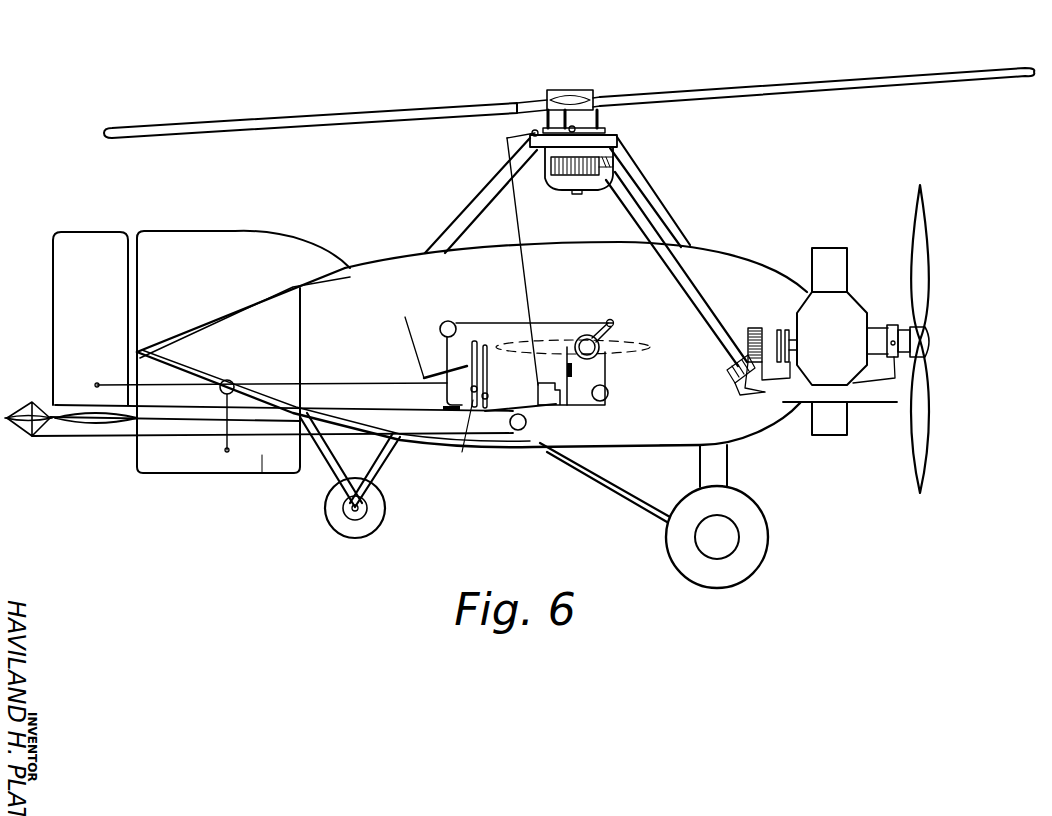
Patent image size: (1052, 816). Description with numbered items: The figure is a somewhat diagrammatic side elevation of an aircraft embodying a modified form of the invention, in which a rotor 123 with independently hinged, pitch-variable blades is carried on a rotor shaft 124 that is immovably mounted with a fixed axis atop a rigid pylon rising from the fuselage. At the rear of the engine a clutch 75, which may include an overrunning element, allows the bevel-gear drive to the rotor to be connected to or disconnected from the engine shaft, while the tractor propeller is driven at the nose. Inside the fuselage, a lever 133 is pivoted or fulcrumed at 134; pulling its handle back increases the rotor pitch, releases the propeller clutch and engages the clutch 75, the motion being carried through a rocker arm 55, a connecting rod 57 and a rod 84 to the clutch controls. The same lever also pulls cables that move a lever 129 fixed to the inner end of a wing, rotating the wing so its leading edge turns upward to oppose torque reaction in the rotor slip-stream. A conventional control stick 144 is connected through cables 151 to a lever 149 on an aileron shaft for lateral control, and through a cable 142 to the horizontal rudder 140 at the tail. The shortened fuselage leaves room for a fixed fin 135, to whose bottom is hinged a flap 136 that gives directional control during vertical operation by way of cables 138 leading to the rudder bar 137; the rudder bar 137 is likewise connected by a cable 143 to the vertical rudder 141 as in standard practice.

The rotor 123 is at (569, 103).
The rotor shaft 124 is at (577, 194).
The fixed fin 135 is at (220, 247).
The vertical rudder 141 is at (62, 344).
The cable 142 is at (200, 430).
The horizontal rudder 140 is at (40, 437).
The cable 143 is at (270, 382).
The cables 138 is at (235, 428).
The flap 136 is at (262, 456).
The clutch 75 is at (784, 330).
The rod 84 is at (694, 401).
The control stick 144 is at (488, 350).
The rudder bar 137 is at (501, 375).
The lever 133 is at (460, 435).
The lever 149 is at (578, 350).
The lever 129 is at (603, 332).
The cables 151 is at (606, 377).
The rocker arm 55 is at (552, 386).
The connecting rod 57 is at (520, 397).
The pivot 134 is at (447, 392).